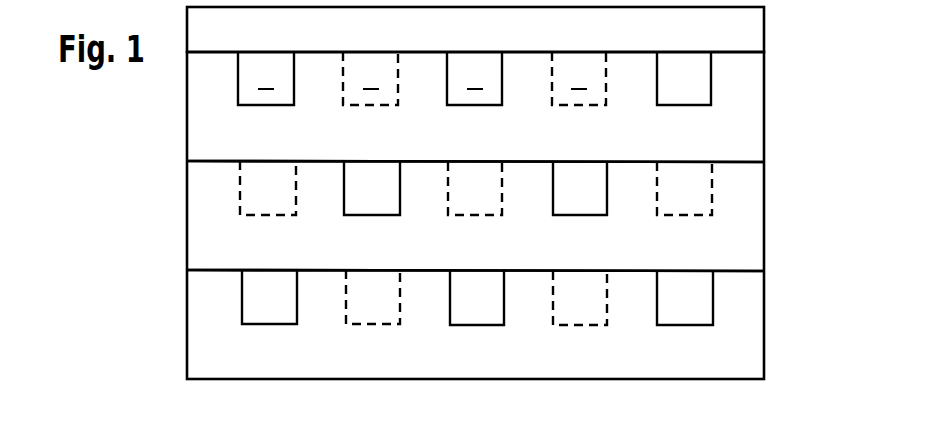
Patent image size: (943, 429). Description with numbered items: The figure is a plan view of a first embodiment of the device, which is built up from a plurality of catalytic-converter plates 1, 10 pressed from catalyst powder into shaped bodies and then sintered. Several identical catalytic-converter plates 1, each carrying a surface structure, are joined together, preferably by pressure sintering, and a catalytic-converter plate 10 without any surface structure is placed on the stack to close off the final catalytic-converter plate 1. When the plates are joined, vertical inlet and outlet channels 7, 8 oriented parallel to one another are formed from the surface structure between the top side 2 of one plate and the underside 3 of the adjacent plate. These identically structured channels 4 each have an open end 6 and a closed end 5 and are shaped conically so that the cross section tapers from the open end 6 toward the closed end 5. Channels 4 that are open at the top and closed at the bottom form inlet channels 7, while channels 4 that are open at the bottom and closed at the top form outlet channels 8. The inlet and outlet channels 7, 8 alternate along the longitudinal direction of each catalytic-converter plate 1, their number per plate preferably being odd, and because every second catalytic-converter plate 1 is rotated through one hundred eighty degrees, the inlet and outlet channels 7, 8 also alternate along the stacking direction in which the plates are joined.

The catalytic-converter plate without surface structure 10 is at (745, 30).
The catalytic-converter plate 1 is at (745, 107).
The top side 2 is at (210, 270).
The underside 3 is at (210, 161).
The channel 4 is at (318, 78).
The closed end 5 is at (252, 197).
The open end 6 is at (253, 304).
The inlet channel 7 is at (474, 78).
The outlet channel 8 is at (579, 78).